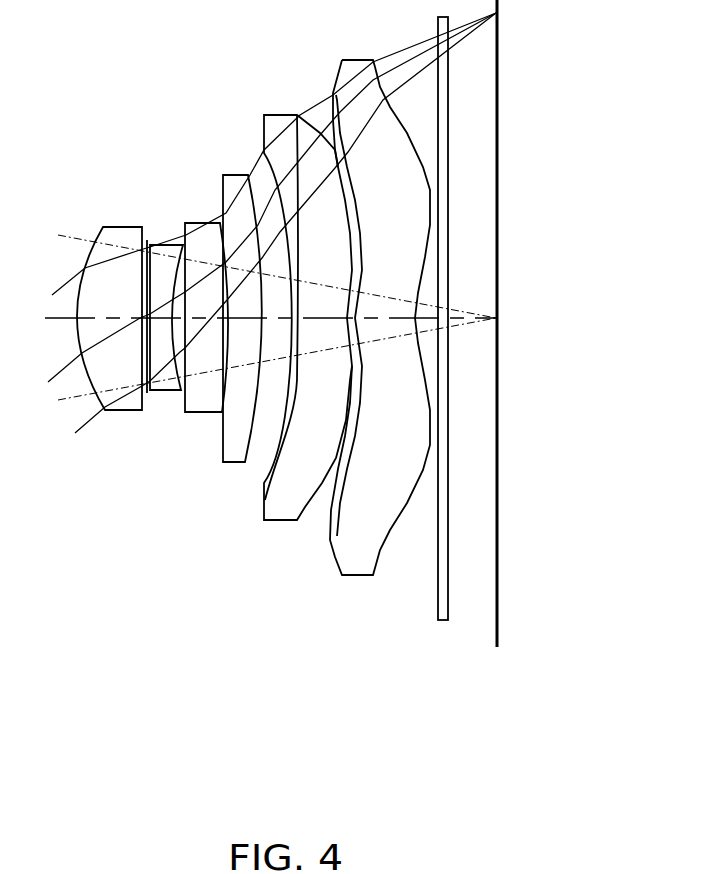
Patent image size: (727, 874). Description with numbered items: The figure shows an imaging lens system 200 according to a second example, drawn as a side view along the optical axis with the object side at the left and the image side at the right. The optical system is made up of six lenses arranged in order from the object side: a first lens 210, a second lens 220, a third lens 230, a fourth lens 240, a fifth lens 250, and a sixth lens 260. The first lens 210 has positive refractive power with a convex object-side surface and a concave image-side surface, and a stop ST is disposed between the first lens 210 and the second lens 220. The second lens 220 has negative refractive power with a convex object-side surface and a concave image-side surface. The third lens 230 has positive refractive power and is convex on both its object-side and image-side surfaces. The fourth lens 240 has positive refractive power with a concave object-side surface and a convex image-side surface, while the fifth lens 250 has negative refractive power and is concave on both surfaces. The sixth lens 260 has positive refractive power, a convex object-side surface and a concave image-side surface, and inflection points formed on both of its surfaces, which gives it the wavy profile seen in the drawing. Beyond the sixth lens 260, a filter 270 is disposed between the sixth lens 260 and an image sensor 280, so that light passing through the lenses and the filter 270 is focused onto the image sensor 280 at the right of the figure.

The imaging lens system 200 is at (145, 93).
The stop ST is at (155, 240).
The first lens 210 is at (117, 413).
The second lens 220 is at (160, 392).
The third lens 230 is at (198, 417).
The fourth lens 240 is at (233, 463).
The fifth lens 250 is at (280, 522).
The sixth lens 260 is at (355, 577).
The filter 270 is at (443, 622).
The image sensor 280 is at (500, 618).